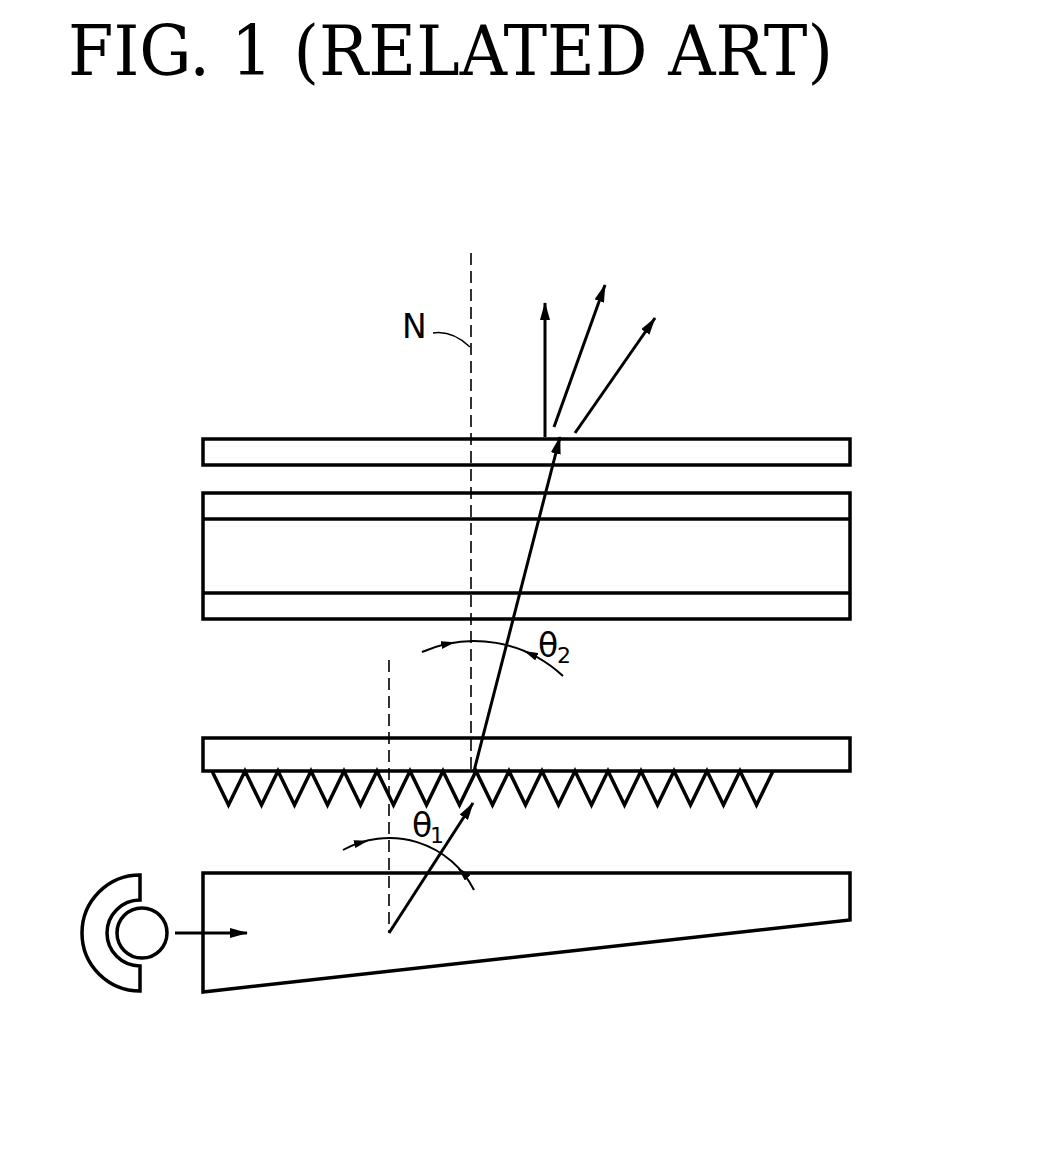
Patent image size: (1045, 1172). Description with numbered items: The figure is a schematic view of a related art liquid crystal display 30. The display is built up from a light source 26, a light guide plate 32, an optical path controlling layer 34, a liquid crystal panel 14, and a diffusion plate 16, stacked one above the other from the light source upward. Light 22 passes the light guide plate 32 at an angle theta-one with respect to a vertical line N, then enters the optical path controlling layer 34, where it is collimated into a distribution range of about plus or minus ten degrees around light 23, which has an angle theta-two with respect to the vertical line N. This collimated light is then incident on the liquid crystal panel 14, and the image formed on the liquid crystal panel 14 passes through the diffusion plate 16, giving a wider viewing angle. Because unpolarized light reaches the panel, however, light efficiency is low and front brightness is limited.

The liquid crystal panel 14 is at (870, 493).
The diffusion plate 16 is at (855, 449).
The light 22 is at (452, 840).
The light 23 is at (493, 697).
The light source 26 is at (150, 917).
The liquid crystal display 30 is at (88, 729).
The light guide plate 32 is at (855, 896).
The optical path controlling layer 34 is at (855, 754).